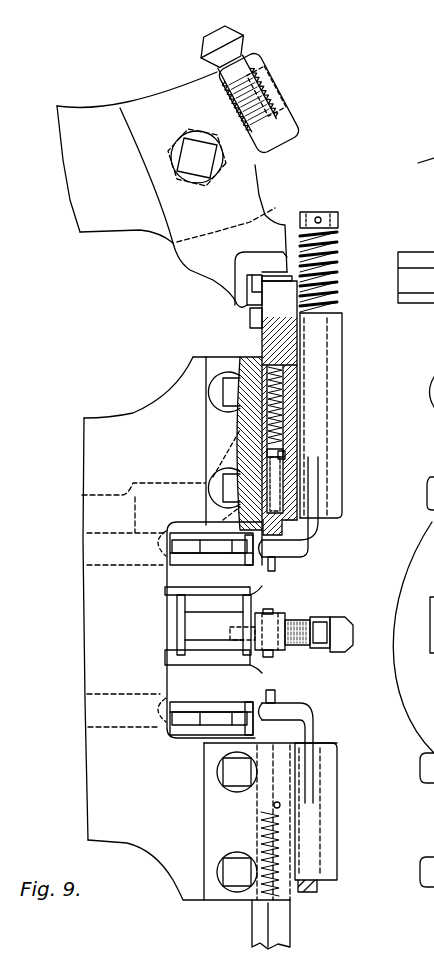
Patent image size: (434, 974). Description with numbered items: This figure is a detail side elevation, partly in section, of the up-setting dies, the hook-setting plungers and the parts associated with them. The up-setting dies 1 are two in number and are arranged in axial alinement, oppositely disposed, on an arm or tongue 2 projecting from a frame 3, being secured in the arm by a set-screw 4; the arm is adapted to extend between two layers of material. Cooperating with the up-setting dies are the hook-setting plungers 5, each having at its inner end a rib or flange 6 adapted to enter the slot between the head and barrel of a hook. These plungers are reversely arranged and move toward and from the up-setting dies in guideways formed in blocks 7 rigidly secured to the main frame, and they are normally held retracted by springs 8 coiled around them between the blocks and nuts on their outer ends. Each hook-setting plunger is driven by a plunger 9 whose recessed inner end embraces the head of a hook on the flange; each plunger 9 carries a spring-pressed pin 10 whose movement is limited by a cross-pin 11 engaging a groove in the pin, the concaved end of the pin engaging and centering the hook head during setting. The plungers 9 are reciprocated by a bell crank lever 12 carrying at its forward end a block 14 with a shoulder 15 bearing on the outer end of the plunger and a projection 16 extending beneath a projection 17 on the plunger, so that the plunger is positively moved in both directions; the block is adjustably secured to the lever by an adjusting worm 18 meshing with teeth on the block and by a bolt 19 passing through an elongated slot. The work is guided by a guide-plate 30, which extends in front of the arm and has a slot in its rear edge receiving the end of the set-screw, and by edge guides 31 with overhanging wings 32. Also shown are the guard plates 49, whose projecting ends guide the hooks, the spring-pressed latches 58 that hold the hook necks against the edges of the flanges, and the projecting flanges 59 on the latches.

The up-setting dies 1 is at (272, 612).
The arm or tongue 2 is at (250, 617).
The frame 3 is at (110, 428).
The set-screw 4 is at (318, 627).
The hook-setting plungers 5 is at (323, 397).
The ribs or flanges 6 is at (309, 548).
The blocks 7 is at (343, 341).
The springs 8 is at (330, 253).
The plunger 9 is at (260, 330).
The spring-pressed pin 10 is at (260, 467).
The cross-pin 11 is at (287, 450).
The bell crank lever 12 is at (97, 95).
The block 14 is at (277, 217).
The shoulder 15 is at (283, 267).
The projection 16 is at (200, 297).
The projection 17 is at (247, 281).
The adjusting worm 18 is at (235, 95).
The bolt 19 is at (190, 158).
The guide-plate 30 is at (342, 627).
The edge guides 31 is at (183, 603).
The overhanging wings 32 is at (165, 588).
The guard plates 49 is at (125, 590).
The spring-pressed latches 58 is at (220, 552).
The projecting flanges 59 is at (256, 694).